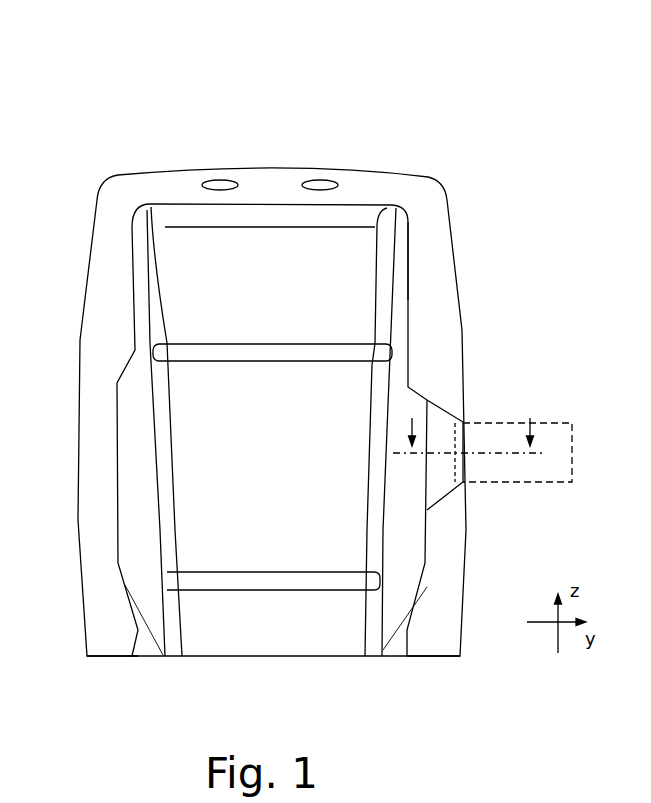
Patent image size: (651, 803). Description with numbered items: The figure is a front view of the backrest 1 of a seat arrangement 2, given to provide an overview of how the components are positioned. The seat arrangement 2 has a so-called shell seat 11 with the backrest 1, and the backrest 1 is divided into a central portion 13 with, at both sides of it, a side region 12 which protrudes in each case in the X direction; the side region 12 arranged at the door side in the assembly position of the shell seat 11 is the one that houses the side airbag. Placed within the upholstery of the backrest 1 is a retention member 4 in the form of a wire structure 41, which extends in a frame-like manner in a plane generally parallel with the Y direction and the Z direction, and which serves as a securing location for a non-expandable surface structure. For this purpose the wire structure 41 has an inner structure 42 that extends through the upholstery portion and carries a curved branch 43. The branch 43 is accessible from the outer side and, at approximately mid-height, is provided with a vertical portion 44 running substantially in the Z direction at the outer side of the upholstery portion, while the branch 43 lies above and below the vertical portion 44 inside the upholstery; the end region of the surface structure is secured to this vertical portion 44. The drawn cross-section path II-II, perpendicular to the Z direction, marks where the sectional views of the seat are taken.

The backrest 1 is at (395, 167).
The seat arrangement 2 is at (78, 140).
The retention member 4 is at (446, 372).
The shell seat 11 is at (446, 143).
The side region 12 is at (92, 680).
The central portion 13 is at (377, 680).
The wire structure 41 is at (413, 212).
The inner structure 42 is at (410, 235).
The curved branch 43 is at (468, 418).
The vertical portion 44 is at (572, 423).